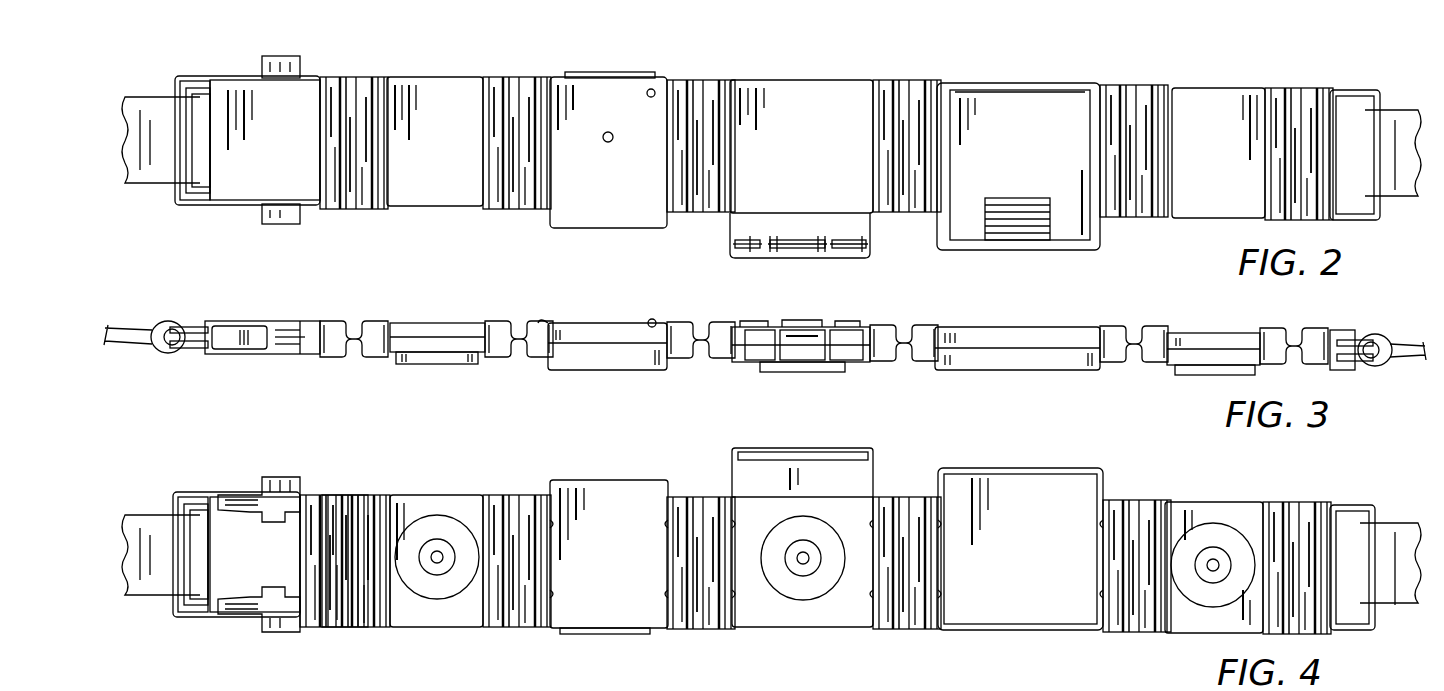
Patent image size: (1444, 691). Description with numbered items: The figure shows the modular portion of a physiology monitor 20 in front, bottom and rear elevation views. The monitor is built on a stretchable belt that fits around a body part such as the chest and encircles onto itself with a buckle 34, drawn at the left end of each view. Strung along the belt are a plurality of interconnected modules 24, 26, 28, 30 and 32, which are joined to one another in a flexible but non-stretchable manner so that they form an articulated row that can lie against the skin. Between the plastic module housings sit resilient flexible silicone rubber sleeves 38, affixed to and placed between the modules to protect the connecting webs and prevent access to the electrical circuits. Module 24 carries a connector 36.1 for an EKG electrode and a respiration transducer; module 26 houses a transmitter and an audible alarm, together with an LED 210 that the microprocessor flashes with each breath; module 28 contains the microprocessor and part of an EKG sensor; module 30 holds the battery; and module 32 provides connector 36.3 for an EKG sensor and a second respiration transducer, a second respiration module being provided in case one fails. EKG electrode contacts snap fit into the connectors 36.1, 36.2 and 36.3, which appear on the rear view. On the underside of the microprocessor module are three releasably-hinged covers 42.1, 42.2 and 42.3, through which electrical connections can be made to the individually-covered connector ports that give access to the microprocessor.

In FIG. 2, the physiology monitor 20 is at (737, 64).
In FIG. 2, the module 24 is at (460, 78).
In FIG. 3, the module 24 is at (432, 364).
In FIG. 4, the module 24 is at (436, 566).
In FIG. 2, the module 26 is at (622, 92).
In FIG. 3, the module 26 is at (612, 358).
In FIG. 4, the module 26 is at (632, 480).
In FIG. 2, the module 28 is at (840, 90).
In FIG. 3, the module 28 is at (809, 357).
In FIG. 4, the module 28 is at (815, 545).
In FIG. 2, the module 30 is at (1042, 98).
In FIG. 3, the module 30 is at (1034, 370).
In FIG. 4, the module 30 is at (1052, 468).
In FIG. 2, the module 32 is at (1226, 98).
In FIG. 3, the module 32 is at (1197, 376).
In FIG. 4, the module 32 is at (1200, 569).
In FIG. 2, the buckle 34 is at (264, 95).
In FIG. 3, the buckle 34 is at (289, 358).
In FIG. 4, the buckle 34 is at (244, 488).
In FIG. 2, the silicone rubber sleeves 38 is at (483, 196).
In FIG. 3, the silicone rubber sleeves 38 is at (678, 320).
In FIG. 2, the releasably-hinged cover 42.1 is at (748, 258).
In FIG. 3, the releasably-hinged cover 42.1 is at (746, 364).
In FIG. 2, the releasably-hinged cover 42.2 is at (795, 258).
In FIG. 3, the releasably-hinged cover 42.2 is at (803, 362).
In FIG. 2, the releasably-hinged cover 42.3 is at (848, 258).
In FIG. 3, the releasably-hinged cover 42.3 is at (864, 362).
In FIG. 2, the LED 210 is at (646, 98).
In FIG. 4, the connector 36.1 is at (438, 563).
In FIG. 4, the connector 36.2 is at (806, 565).
In FIG. 4, the connector 36.3 is at (1212, 572).